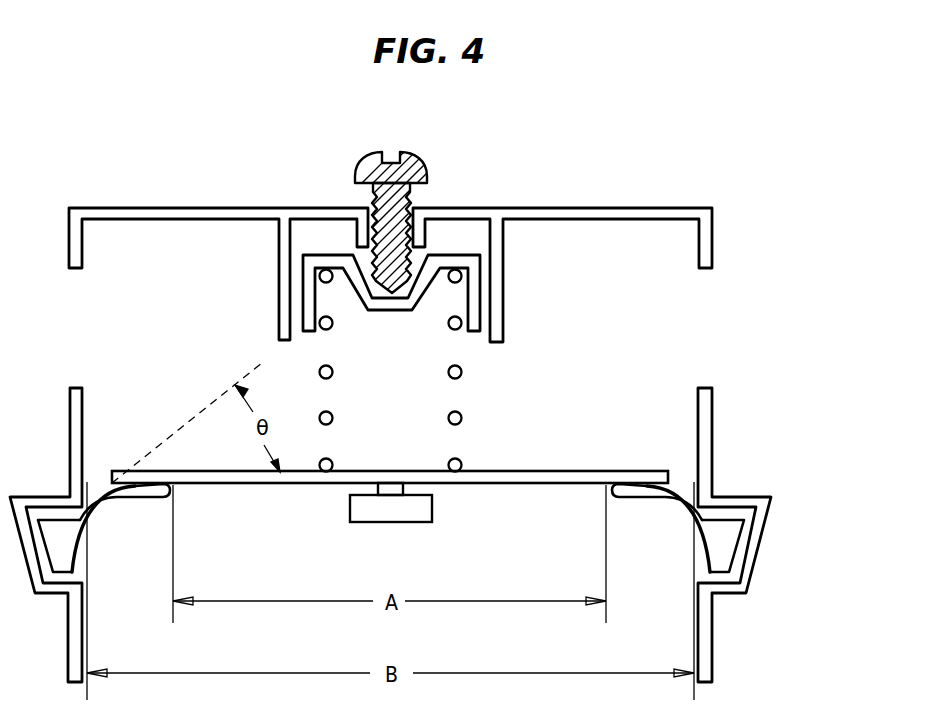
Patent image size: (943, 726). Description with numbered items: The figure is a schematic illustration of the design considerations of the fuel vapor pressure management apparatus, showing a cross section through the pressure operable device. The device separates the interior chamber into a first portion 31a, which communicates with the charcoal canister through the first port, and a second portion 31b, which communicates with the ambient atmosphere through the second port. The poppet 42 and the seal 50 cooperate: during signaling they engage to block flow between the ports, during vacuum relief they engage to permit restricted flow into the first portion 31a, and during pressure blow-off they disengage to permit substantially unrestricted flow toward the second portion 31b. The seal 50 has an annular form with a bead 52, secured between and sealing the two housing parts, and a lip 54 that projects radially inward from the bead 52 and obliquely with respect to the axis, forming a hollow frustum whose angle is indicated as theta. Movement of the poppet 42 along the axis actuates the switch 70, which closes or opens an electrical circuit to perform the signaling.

The first portion 31a is at (712, 650).
The second portion 31b is at (712, 238).
The poppet 42 is at (458, 373).
The seal 50 is at (815, 455).
The bead 52 is at (674, 500).
The lip 54 is at (720, 545).
The switch 70 is at (433, 509).